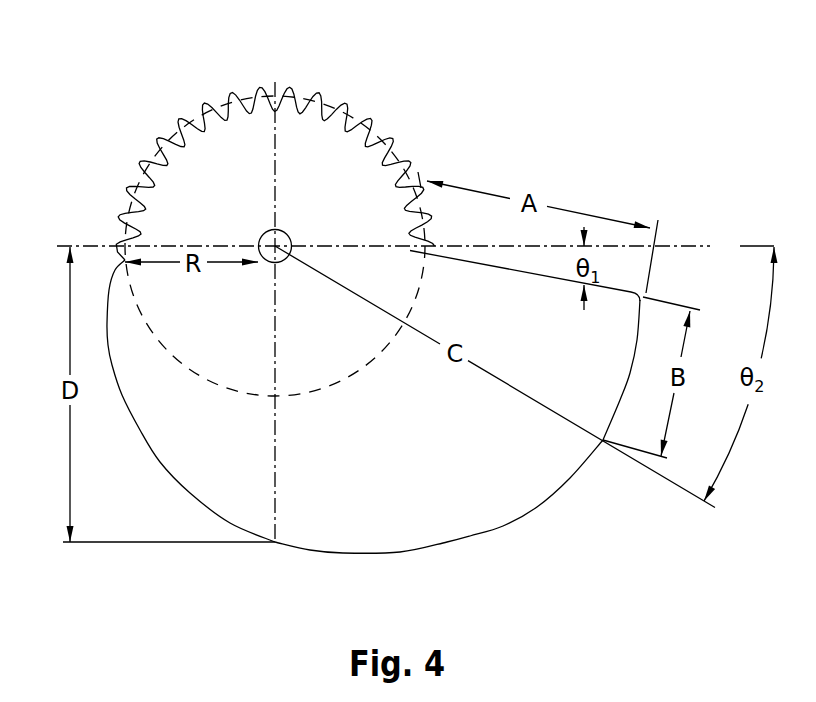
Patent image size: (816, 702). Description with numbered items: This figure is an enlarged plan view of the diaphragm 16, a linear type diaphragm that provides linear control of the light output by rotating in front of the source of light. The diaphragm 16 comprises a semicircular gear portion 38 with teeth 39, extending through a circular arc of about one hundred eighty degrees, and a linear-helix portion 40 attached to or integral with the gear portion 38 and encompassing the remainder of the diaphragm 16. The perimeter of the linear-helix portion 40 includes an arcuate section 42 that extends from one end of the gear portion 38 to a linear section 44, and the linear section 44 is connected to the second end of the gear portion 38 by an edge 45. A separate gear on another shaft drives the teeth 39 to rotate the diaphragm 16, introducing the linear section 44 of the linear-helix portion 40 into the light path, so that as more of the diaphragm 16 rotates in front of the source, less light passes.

The diaphragm 16 is at (458, 72).
The gear portion 38 is at (275, 207).
The teeth 39 is at (290, 88).
The linear-helix portion 40 is at (377, 376).
The arcuate section 42 is at (403, 553).
The linear section 44 is at (620, 400).
The edge 45 is at (477, 266).